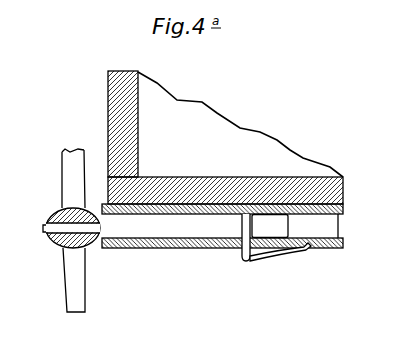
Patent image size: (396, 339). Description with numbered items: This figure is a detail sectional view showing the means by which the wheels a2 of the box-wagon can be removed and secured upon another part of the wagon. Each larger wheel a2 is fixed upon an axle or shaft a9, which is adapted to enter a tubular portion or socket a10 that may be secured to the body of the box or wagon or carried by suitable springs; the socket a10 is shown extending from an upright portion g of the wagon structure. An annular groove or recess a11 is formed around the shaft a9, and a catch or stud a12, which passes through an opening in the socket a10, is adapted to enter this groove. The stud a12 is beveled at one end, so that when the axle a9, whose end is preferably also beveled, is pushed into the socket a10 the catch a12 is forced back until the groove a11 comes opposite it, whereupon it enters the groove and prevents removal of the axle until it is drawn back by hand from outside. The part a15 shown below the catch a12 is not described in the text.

The upright bracket g is at (123, 124).
The tubular portion or socket a10 is at (108, 206).
The axle or shaft a9 is at (222, 226).
The wheels a2 is at (68, 286).
The catch or stud a12 is at (241, 255).
The annular groove or recess a11 is at (270, 226).
The lever a15 is at (276, 255).